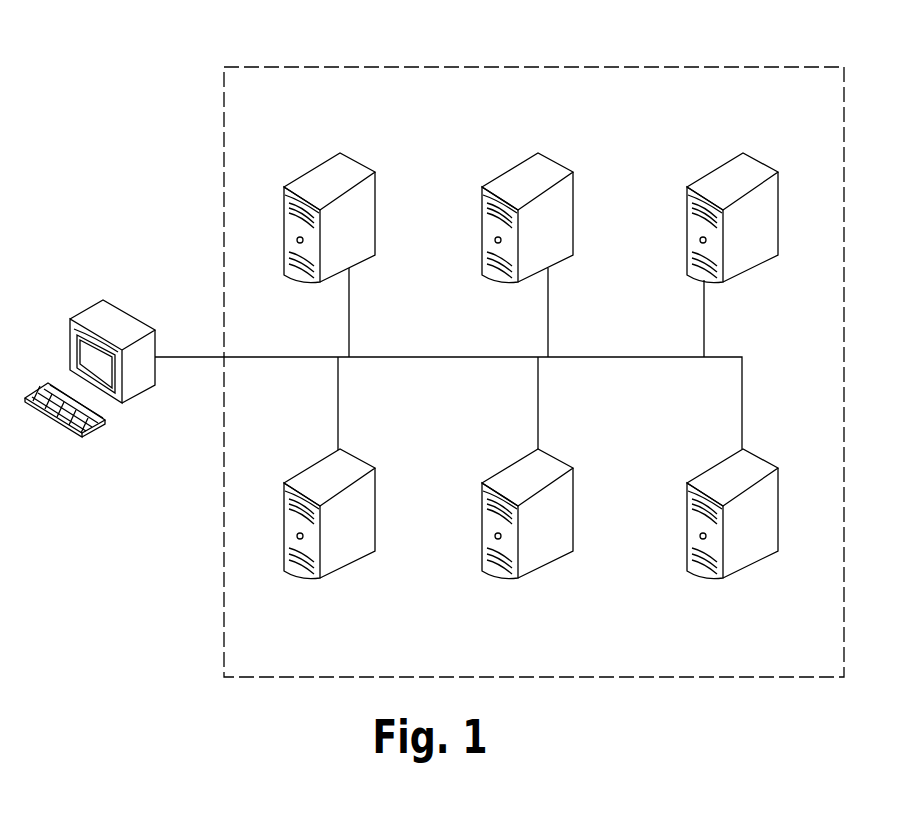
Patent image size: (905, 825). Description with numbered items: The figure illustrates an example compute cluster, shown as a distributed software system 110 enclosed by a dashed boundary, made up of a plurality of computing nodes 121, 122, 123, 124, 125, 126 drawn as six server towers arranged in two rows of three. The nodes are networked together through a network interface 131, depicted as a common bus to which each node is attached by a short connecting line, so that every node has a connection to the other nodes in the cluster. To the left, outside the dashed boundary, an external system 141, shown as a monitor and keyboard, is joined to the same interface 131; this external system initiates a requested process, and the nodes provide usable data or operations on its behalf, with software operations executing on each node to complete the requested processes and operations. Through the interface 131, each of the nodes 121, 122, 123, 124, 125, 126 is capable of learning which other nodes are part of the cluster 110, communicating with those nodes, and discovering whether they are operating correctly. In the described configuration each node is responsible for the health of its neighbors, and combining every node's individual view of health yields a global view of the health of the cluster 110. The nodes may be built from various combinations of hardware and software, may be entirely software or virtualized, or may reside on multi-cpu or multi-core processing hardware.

The distributed software system 110 is at (278, 67).
The computing node 121 is at (333, 158).
The computing node 122 is at (531, 158).
The computing node 123 is at (735, 157).
The computing node 124 is at (313, 463).
The computing node 125 is at (511, 463).
The computing node 126 is at (716, 463).
The network interface 131 is at (756, 356).
The external system 141 is at (95, 300).